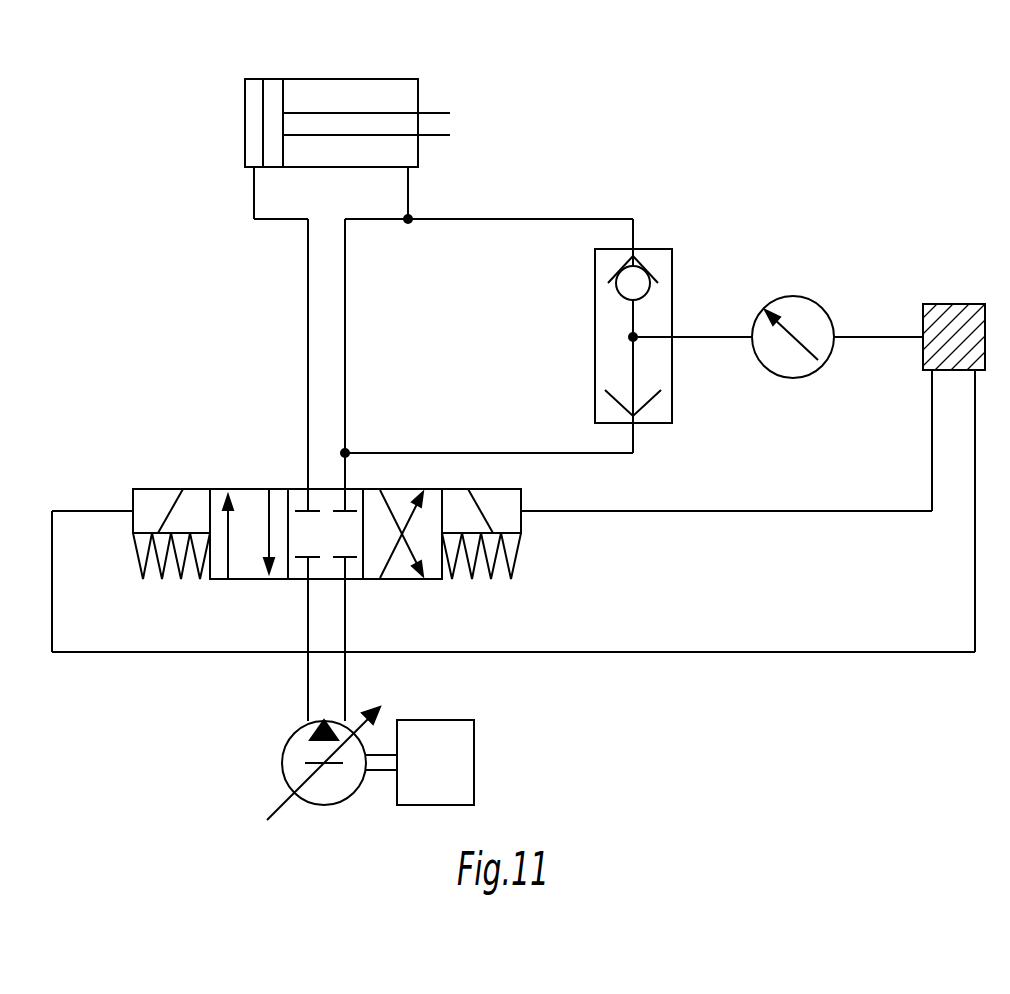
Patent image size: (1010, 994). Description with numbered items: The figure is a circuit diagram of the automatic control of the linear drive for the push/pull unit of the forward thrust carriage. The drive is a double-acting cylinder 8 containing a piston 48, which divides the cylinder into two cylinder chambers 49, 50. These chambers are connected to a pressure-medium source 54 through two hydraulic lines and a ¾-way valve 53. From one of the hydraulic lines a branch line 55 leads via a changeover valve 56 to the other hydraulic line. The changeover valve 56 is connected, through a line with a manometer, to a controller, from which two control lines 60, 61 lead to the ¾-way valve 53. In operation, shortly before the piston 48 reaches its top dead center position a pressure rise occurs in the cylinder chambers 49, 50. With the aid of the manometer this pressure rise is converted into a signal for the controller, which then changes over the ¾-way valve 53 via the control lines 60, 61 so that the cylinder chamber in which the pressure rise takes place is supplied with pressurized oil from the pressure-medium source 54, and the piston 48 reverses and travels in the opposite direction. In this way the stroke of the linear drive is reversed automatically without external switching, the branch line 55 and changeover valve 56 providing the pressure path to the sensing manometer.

The hydraulic cylinder 8 is at (408, 67).
The piston 48 is at (272, 82).
The cylinder chamber 49 is at (244, 122).
The cylinder chamber 50 is at (408, 160).
The ¾-way valve 53 is at (237, 478).
The pressure-medium source 54 is at (386, 773).
The branch line 55 is at (487, 219).
The changeover valve 56 is at (657, 249).
The control line 60 is at (783, 510).
The control line 61 is at (779, 651).